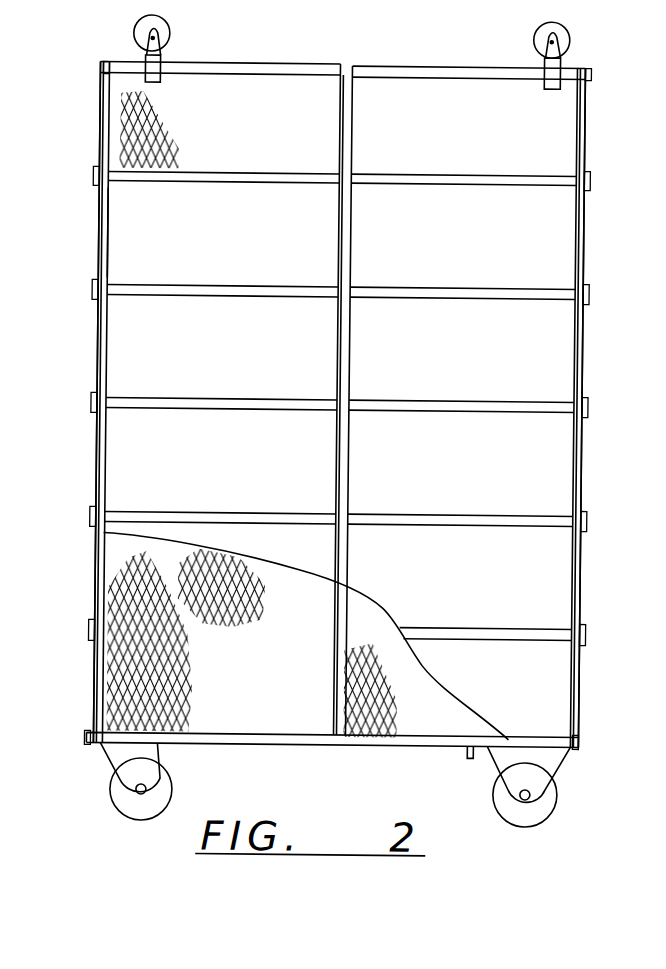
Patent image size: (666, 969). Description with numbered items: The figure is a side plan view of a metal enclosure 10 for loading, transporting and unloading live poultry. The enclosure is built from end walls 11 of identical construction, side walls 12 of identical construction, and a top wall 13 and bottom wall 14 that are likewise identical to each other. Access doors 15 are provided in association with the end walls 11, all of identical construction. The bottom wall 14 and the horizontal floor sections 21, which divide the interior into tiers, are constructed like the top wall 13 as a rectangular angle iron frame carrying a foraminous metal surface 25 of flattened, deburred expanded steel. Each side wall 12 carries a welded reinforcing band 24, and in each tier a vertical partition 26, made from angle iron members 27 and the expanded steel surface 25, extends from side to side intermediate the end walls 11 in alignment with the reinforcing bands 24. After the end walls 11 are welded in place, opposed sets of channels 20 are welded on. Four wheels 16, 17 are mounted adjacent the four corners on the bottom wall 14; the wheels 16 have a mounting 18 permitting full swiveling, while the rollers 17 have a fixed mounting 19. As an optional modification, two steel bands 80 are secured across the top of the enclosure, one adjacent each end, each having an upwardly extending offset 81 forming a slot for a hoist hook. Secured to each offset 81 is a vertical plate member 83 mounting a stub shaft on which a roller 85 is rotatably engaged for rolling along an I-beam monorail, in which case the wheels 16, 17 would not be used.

The metal enclosure 10 is at (302, 243).
The end wall 11 is at (98, 240).
The side wall 12 is at (148, 481).
The top wall 13 is at (282, 68).
The bottom wall 14 is at (305, 745).
The access door 15 is at (90, 115).
The swiveling wheel 16 is at (170, 808).
The fixed wheel 17 is at (500, 808).
The swivel mounting 18 is at (122, 760).
The fixed mounting 19 is at (546, 772).
The channel 20 is at (97, 68).
The horizontal floor section 21 is at (385, 182).
The reinforcing band 24 is at (343, 250).
The foraminous metal surface 25 is at (128, 690).
The vertical partition 26 is at (345, 695).
The angle iron member 27 is at (346, 663).
The steel band 80 is at (150, 84).
The upwardly extending offset 81 is at (142, 58).
The vertical plate member 83 is at (156, 42).
The roller 85 is at (158, 30).